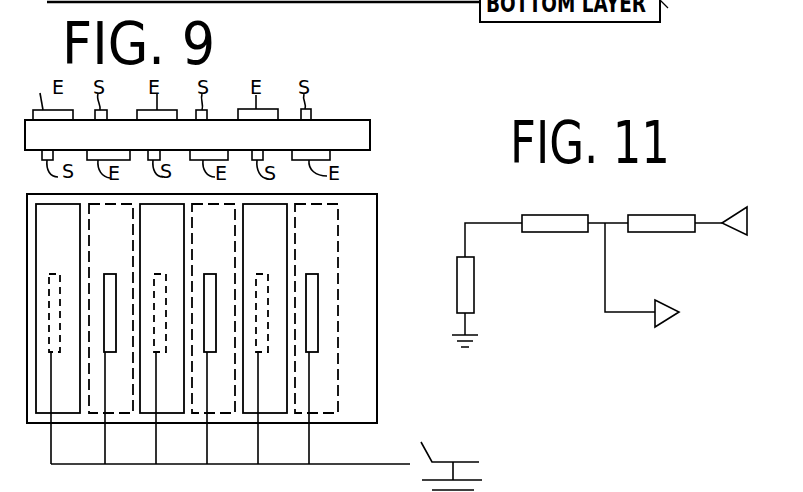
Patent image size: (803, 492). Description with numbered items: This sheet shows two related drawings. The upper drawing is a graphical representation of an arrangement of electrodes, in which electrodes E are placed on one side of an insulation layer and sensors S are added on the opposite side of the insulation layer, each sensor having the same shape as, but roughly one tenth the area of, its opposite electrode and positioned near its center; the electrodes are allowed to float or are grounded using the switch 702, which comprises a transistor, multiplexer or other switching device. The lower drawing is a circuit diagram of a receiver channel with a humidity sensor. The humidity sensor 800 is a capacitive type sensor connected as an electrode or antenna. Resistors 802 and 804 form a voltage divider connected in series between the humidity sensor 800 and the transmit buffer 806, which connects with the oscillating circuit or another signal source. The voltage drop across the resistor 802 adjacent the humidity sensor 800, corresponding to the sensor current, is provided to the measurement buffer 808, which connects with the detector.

In FIG. 9, the switch 702 is at (427, 441).
In FIG. 11, the humidity sensor 800 is at (474, 287).
In FIG. 11, the resistor 802 is at (555, 215).
In FIG. 11, the resistor 804 is at (660, 215).
In FIG. 11, the transmit buffer 806 is at (742, 207).
In FIG. 11, the measurement buffer 808 is at (668, 302).